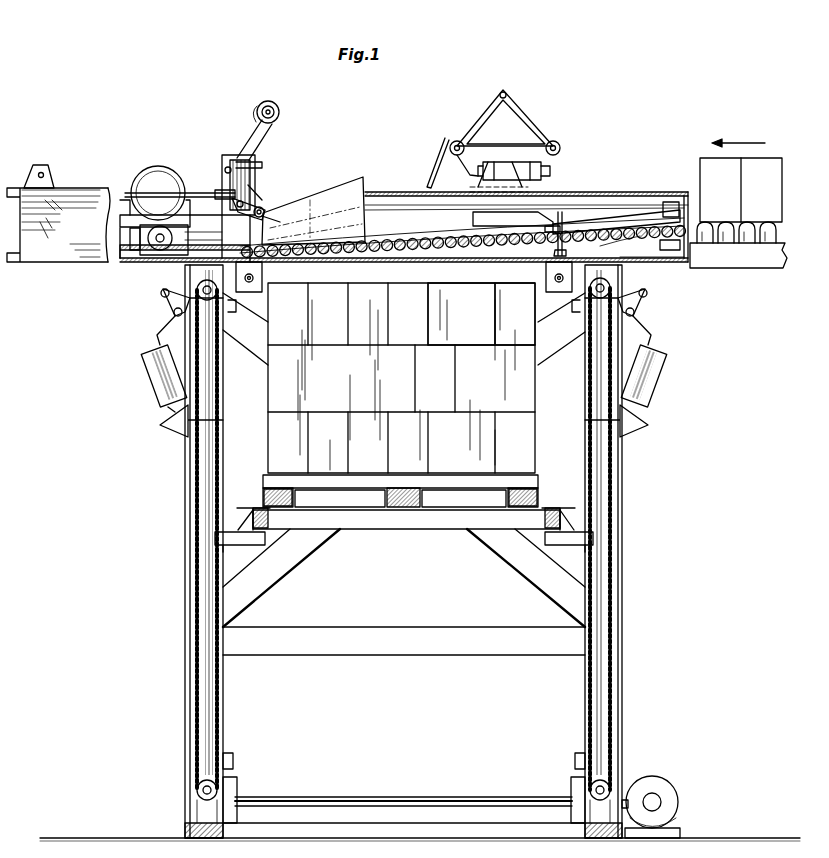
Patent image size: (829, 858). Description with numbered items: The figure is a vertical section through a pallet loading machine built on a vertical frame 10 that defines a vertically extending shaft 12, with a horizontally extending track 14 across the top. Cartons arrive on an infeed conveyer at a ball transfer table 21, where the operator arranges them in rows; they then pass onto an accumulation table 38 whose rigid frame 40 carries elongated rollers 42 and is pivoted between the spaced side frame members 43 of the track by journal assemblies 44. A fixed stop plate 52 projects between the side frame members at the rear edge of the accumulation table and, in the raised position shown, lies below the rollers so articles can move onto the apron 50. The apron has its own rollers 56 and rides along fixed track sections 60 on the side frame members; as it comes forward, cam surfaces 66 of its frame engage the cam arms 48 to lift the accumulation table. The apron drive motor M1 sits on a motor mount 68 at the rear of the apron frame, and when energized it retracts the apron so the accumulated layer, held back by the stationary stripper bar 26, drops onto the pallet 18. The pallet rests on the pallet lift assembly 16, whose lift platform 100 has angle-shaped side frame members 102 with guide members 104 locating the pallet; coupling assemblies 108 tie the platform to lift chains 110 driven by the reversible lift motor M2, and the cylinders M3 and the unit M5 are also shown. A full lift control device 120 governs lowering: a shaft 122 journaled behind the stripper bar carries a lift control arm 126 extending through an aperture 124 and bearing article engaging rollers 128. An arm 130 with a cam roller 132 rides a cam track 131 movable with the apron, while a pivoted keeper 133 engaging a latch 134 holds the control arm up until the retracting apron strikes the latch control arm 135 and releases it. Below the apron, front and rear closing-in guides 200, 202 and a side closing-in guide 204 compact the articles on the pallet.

The vertical frame 10 is at (200, 477).
The vertically extending shaft 12 is at (412, 607).
The horizontally extending track 14 is at (402, 190).
The pallet lift assembly 16 is at (355, 532).
The pallet 18 is at (545, 490).
The ball transfer table 21 is at (720, 262).
The stripper bar 26 is at (265, 153).
The accumulation table 38 is at (646, 214).
The rigid frame 40 is at (690, 222).
The elongated rollers 42 is at (614, 240).
The side frame members 43 is at (650, 262).
The journal assemblies 44 is at (680, 200).
The cam arms 48 is at (504, 226).
The apron 50 is at (449, 219).
The stop plate 52 is at (560, 218).
The rollers 56 is at (372, 262).
The track sections 60 is at (122, 248).
The cam surfaces 66 is at (548, 232).
The motor mount 68 is at (130, 222).
The lift platform 100 is at (436, 532).
The side frame members 102 is at (268, 518).
The guide members 104 is at (266, 489).
The coupling assembly 108 is at (218, 538).
The lift chains 110 is at (223, 693).
The full lift control device 120 is at (262, 140).
The shaft 122 is at (232, 190).
The aperture 124 is at (255, 186).
The lift control arm 126 is at (258, 112).
The article engaging rollers 128 is at (282, 100).
The arm 130 is at (262, 205).
The cam track 131 is at (270, 216).
The cam roller 132 is at (270, 212).
The pivoted keeper 133 is at (226, 175).
The latch 134 is at (232, 205).
The latch control arm 135 is at (42, 222).
The front closing-in guide 200 is at (538, 280).
The rear closing-in guide 202 is at (262, 273).
The side closing-in guide 204 is at (446, 270).
The apron drive motor M1 is at (172, 152).
The reversible lift motor M2 is at (665, 776).
The cylinder M3 is at (152, 378).
The motor M5 is at (520, 162).